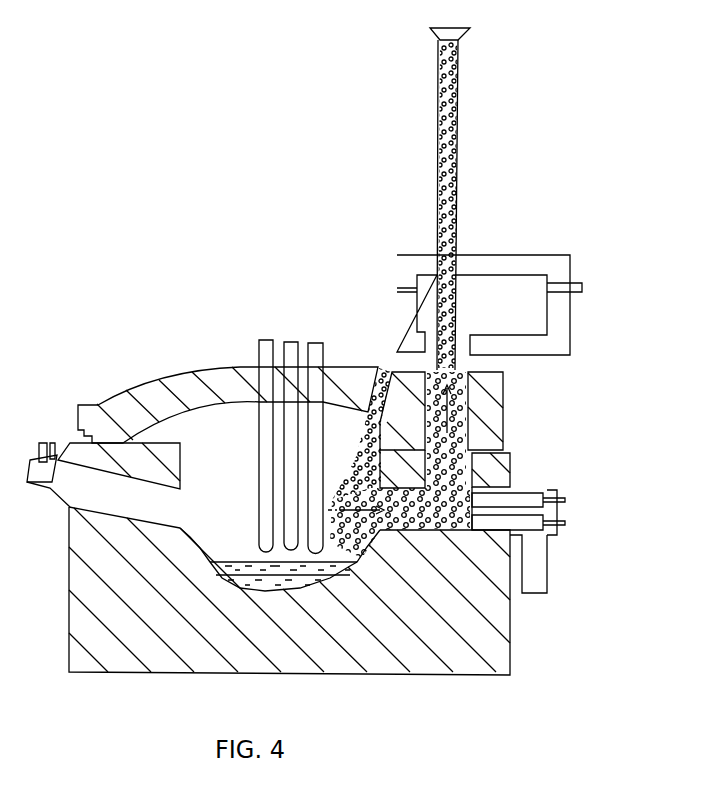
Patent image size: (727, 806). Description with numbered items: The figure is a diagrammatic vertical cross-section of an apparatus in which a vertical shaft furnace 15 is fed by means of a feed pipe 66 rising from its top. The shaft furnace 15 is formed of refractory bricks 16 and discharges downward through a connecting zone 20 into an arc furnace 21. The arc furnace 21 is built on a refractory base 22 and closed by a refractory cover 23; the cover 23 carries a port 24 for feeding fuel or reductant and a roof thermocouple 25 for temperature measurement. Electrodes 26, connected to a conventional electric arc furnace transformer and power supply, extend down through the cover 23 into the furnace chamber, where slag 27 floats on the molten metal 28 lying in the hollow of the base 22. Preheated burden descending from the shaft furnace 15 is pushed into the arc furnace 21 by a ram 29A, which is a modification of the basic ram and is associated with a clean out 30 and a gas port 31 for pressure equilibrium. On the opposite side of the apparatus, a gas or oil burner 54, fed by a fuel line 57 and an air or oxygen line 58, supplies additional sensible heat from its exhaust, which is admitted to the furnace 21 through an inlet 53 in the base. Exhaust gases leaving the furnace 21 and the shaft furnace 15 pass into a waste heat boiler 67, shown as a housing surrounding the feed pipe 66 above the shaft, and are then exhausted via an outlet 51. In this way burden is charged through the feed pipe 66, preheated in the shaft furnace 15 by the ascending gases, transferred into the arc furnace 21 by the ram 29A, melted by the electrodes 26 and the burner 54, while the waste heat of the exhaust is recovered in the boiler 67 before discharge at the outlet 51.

The feed pipe 66 is at (456, 165).
The waste heat boiler 67 is at (490, 283).
The outlet 51 is at (576, 290).
The refractory bricks 16 is at (497, 397).
The vertical shaft furnace 15 is at (460, 442).
The connecting zone 20 is at (408, 512).
The port 24 is at (377, 387).
The refractory cover 23 is at (200, 378).
The roof thermocouple 25 is at (156, 427).
The electrodes 26 is at (273, 343).
The gas or oil burner 54 is at (33, 480).
The fuel line 57 is at (42, 443).
The air or oxygen line 58 is at (56, 450).
The refractory base 22 is at (356, 672).
The inlet 53 is at (125, 513).
The arc furnace 21 is at (192, 532).
The slag 27 is at (221, 570).
The lower melt layer 28 is at (262, 585).
The ram 29A is at (548, 481).
The gas port 31 is at (557, 553).
The clean out 30 is at (535, 588).